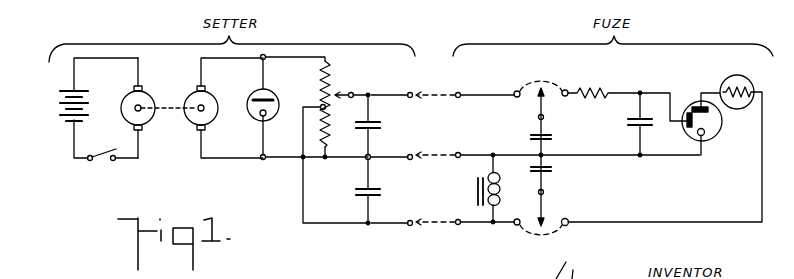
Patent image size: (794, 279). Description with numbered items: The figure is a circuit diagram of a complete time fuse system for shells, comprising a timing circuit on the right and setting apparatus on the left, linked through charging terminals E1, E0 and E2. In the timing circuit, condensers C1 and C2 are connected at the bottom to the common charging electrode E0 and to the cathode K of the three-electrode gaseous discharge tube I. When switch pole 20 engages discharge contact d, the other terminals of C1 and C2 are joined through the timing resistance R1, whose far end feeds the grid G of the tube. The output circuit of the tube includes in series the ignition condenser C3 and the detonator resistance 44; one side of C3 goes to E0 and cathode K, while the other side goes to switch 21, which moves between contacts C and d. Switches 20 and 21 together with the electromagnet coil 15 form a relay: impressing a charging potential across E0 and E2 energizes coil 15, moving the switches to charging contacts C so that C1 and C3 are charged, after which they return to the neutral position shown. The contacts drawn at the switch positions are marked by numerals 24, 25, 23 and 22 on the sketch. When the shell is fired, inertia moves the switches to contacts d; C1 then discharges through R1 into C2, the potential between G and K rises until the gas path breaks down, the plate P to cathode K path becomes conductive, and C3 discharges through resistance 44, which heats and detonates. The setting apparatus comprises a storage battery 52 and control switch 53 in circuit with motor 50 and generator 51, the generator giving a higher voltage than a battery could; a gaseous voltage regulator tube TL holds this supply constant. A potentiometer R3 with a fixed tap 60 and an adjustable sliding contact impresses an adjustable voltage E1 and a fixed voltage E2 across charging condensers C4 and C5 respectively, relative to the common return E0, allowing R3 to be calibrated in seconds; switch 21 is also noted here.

The electromagnet coil 15 is at (508, 196).
The switch pole 20 is at (543, 80).
The switch 21 is at (540, 230).
The contact d 22 is at (566, 218).
The contact c 23 is at (517, 218).
The contact c 24 is at (513, 106).
The contact d 25 is at (563, 105).
The detonator resistance 44 is at (750, 78).
The motor 50 is at (148, 96).
The generator 51 is at (183, 122).
The battery 52 is at (58, 118).
The control switch 53 is at (100, 166).
The fixed tap 60 is at (319, 105).
The timing resistance R1 is at (604, 82).
The potentiometer R3 is at (331, 82).
The condenser C1 is at (549, 137).
The condenser C2 is at (627, 119).
The ignition condenser C3 is at (552, 172).
The charging condenser C4 is at (361, 128).
The charging condenser C5 is at (360, 190).
The charging terminal E1 is at (416, 88).
The charging electrode E0 is at (417, 150).
The charging terminal E2 is at (417, 217).
The voltage regulator tube TL is at (250, 93).
The plate P is at (695, 106).
The grid G is at (689, 126).
The cathode K is at (705, 138).
The three-electrode gaseous discharge tube I is at (713, 137).
The charging contact C is at (516, 90).
The discharge contact d is at (567, 90).